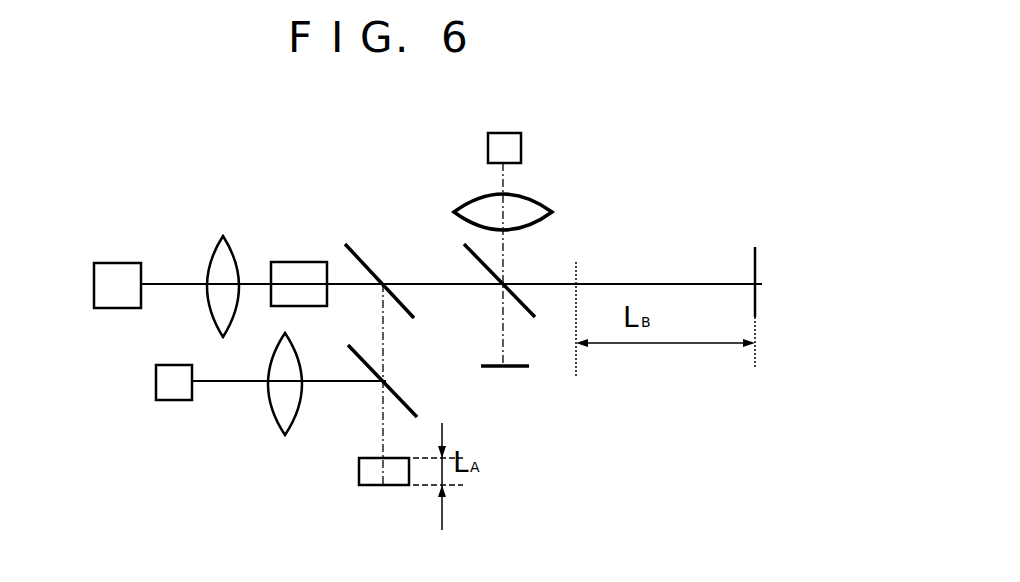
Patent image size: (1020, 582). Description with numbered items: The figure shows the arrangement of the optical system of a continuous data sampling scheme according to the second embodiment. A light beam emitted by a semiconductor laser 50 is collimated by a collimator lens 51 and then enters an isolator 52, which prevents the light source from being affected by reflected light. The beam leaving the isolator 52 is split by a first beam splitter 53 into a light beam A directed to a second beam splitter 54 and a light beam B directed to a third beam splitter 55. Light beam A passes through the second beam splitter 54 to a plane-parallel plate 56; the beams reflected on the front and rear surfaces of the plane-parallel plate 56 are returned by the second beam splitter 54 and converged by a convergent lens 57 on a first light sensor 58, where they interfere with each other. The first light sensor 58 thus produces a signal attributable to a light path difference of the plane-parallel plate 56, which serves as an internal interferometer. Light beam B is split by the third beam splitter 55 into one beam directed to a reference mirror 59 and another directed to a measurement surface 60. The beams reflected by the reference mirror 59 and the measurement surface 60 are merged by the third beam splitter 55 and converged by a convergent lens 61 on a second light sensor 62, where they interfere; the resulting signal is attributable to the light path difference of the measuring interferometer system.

The semiconductor laser 50 is at (118, 263).
The collimator lens 51 is at (224, 236).
The isolator 52 is at (298, 262).
The first beam splitter 53 is at (360, 257).
The second beam splitter 54 is at (408, 402).
The third beam splitter 55 is at (482, 265).
The plane-parallel plate 56 is at (359, 470).
The convergent lens 57 is at (277, 422).
The first light sensor 58 is at (156, 378).
The reference mirror 59 is at (523, 368).
The measurement surface 60 is at (755, 262).
The convergent lens 61 is at (537, 197).
The second light sensor 62 is at (520, 133).